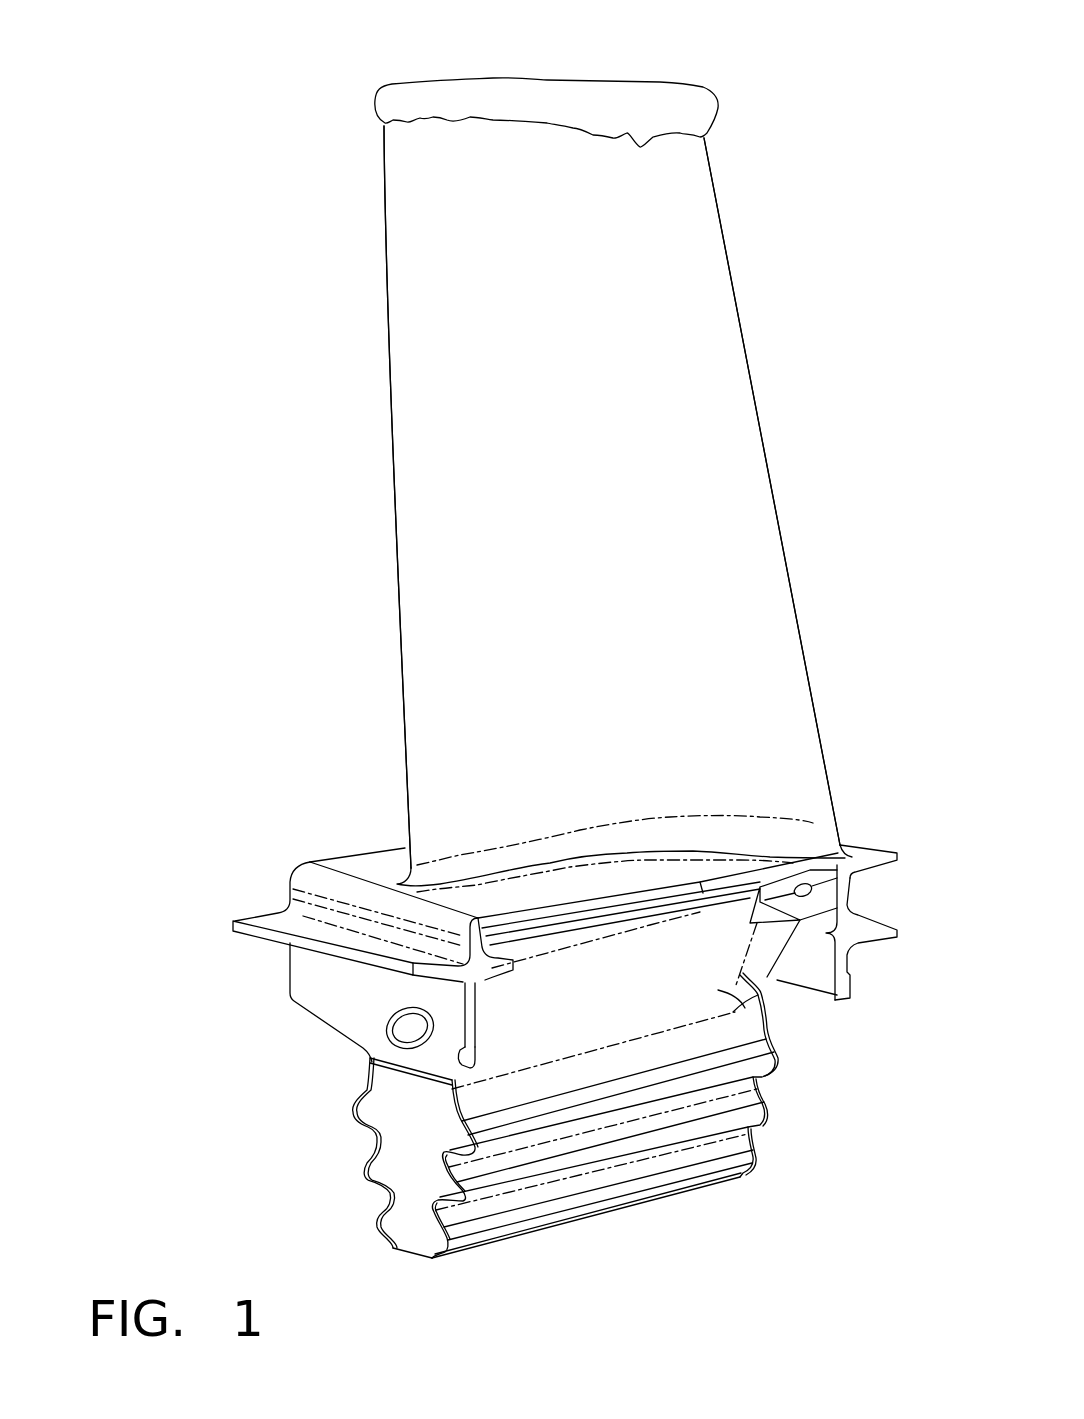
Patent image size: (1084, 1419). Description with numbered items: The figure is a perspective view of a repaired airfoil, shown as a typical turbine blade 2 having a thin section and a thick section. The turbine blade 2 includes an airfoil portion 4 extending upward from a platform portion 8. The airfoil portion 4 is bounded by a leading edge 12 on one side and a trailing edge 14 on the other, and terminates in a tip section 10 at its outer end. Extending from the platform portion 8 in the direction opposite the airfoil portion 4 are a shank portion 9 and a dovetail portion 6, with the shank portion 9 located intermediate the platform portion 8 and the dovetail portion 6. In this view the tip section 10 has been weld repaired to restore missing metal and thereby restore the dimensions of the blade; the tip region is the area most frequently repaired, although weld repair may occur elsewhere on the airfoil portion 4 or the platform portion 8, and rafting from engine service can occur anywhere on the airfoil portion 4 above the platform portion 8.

The turbine blade 2 is at (741, 330).
The airfoil portion 4 is at (405, 400).
The dovetail portion 6 is at (765, 1090).
The platform portion 8 is at (371, 866).
The shank portion 9 is at (773, 1012).
The tip section 10 is at (661, 82).
The leading edge 12 is at (405, 684).
The trailing edge 14 is at (770, 478).